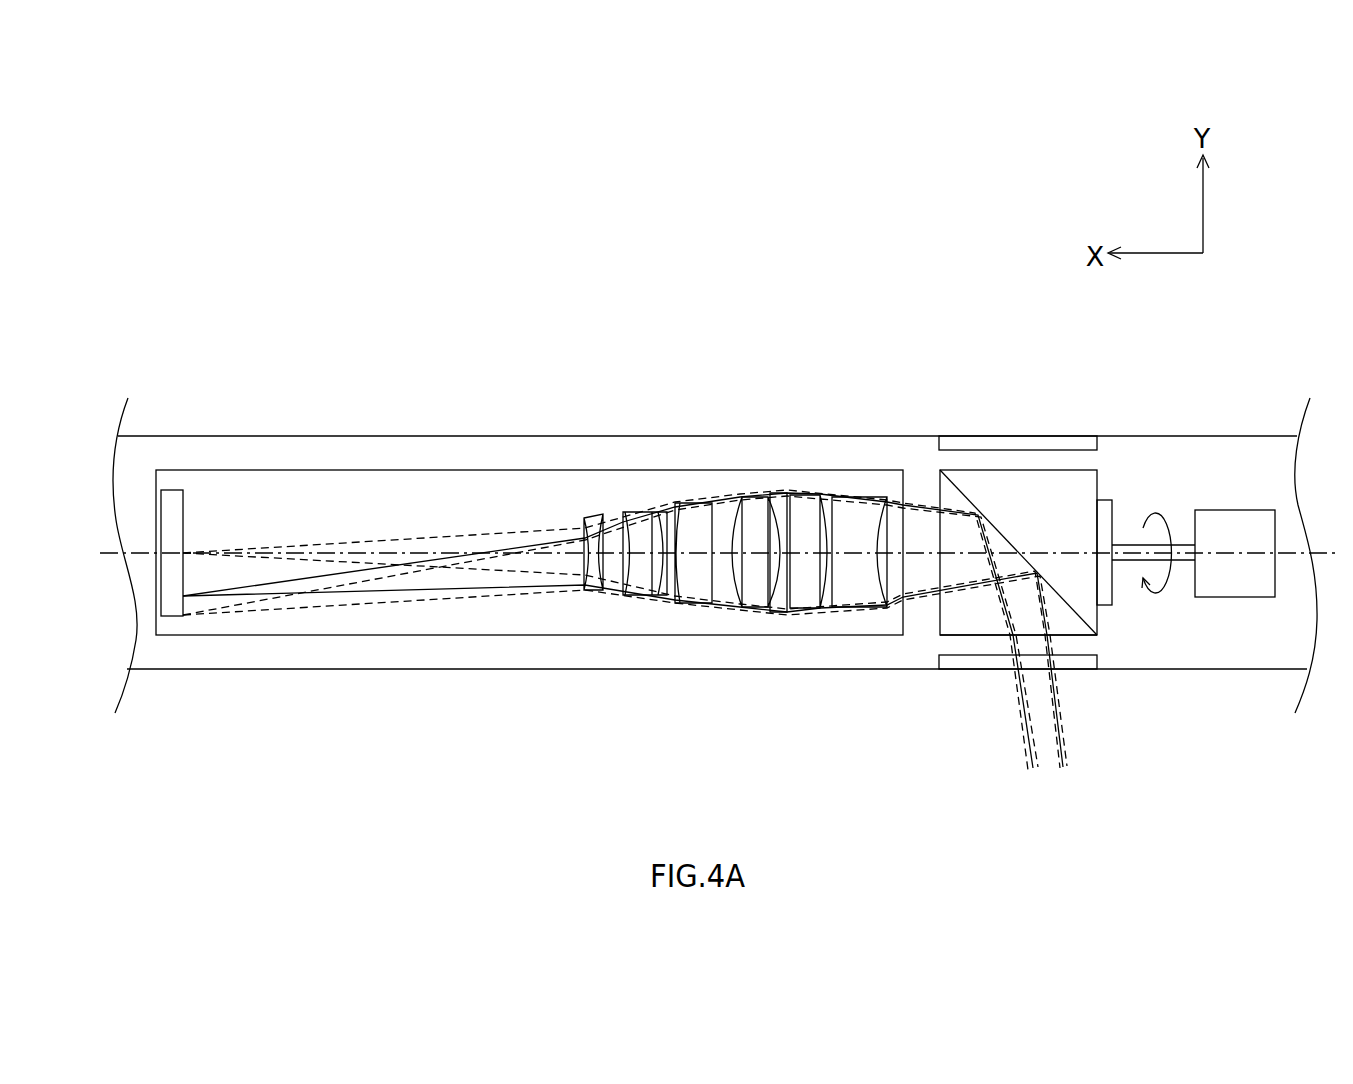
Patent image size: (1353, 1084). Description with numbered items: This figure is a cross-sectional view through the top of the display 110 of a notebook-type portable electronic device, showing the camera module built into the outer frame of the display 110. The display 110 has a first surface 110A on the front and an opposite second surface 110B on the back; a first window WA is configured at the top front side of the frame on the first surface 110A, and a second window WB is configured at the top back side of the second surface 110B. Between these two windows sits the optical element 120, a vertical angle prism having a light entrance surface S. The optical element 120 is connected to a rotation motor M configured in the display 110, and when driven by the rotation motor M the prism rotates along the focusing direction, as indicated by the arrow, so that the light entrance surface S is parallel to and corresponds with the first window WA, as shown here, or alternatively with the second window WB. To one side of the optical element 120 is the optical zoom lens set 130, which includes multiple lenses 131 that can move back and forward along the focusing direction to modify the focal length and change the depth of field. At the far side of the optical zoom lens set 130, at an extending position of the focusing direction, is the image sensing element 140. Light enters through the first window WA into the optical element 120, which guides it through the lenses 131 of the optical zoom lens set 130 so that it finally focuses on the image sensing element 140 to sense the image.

The display 110 is at (679, 483).
The first surface 110A is at (148, 670).
The second surface 110B is at (144, 436).
The image sensing element 140 is at (172, 490).
The optical zoom lens set 130 is at (565, 347).
The lens 131 is at (592, 516).
The optical element 120 is at (1097, 483).
The second window WB is at (1075, 436).
The first window WA is at (1073, 670).
The light entrance surface S is at (978, 637).
The rotation motor M is at (1275, 548).